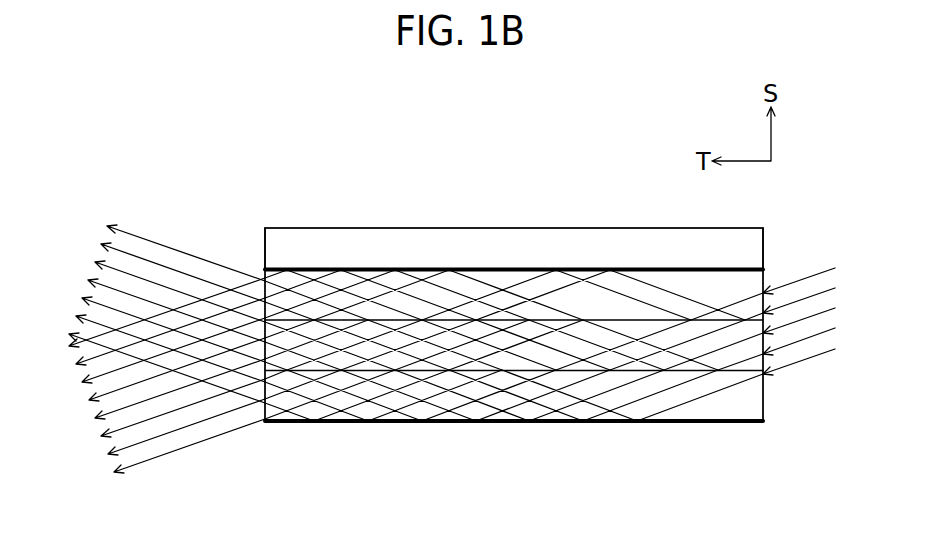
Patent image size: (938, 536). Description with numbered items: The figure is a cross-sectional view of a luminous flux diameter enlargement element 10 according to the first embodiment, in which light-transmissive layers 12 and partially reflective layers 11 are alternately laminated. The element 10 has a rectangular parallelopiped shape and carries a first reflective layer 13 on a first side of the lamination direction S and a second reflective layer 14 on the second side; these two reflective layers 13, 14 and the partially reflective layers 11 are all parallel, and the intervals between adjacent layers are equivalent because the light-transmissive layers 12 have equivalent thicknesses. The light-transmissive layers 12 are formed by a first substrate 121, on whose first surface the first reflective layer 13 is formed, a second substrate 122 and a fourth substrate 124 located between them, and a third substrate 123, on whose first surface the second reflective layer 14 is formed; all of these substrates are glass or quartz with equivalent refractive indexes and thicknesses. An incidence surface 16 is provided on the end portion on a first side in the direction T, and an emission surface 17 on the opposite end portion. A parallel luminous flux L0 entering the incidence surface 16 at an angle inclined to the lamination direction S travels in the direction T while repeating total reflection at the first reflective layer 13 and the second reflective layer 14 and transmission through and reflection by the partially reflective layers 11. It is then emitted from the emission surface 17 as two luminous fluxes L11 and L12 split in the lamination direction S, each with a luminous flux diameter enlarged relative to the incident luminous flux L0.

The luminous flux diameter enlargement element 10 is at (501, 203).
The partially reflective layer 11 is at (578, 368).
The light-transmissive layer 12 is at (514, 311).
The first substrate 121 is at (423, 407).
The second substrate 122 is at (400, 345).
The fourth substrate 124 is at (368, 290).
The third substrate 123 is at (345, 245).
The first reflective layer 13 is at (510, 427).
The second reflective layer 14 is at (520, 268).
The incidence surface 16 is at (765, 395).
The emission surface 17 is at (267, 400).
The luminous flux L0 is at (815, 321).
The luminous flux L11 is at (156, 375).
The luminous flux L12 is at (155, 314).